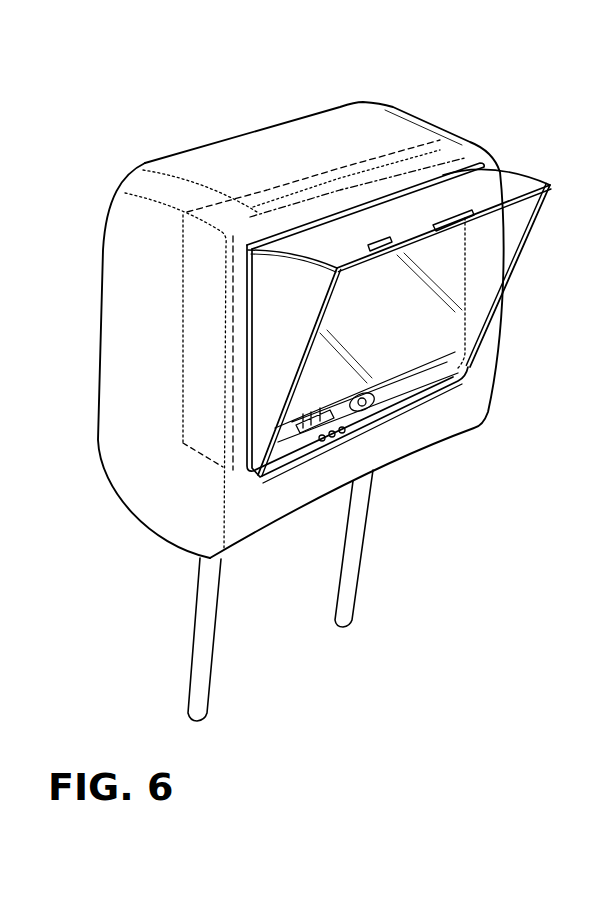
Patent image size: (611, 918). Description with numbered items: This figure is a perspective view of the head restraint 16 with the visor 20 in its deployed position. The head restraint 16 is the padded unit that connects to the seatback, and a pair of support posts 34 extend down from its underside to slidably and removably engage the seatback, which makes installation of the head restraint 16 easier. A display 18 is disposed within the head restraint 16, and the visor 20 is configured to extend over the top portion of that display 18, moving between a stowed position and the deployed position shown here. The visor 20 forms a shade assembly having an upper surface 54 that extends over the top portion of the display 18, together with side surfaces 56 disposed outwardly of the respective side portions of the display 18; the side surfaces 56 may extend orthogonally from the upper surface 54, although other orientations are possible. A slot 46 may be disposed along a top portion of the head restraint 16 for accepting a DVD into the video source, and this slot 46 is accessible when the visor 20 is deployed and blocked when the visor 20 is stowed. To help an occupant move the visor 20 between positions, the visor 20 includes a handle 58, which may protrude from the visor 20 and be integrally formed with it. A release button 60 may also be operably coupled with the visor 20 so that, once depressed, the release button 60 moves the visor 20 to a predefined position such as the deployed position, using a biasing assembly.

The head restraint 16 is at (130, 440).
The display 18 is at (417, 316).
The visor 20 is at (518, 182).
The support posts 34 is at (204, 615).
The slot 46 is at (268, 191).
The upper surface 54 is at (464, 190).
The side surfaces 56 is at (277, 322).
The handle 58 is at (385, 240).
The release button 60 is at (376, 238).